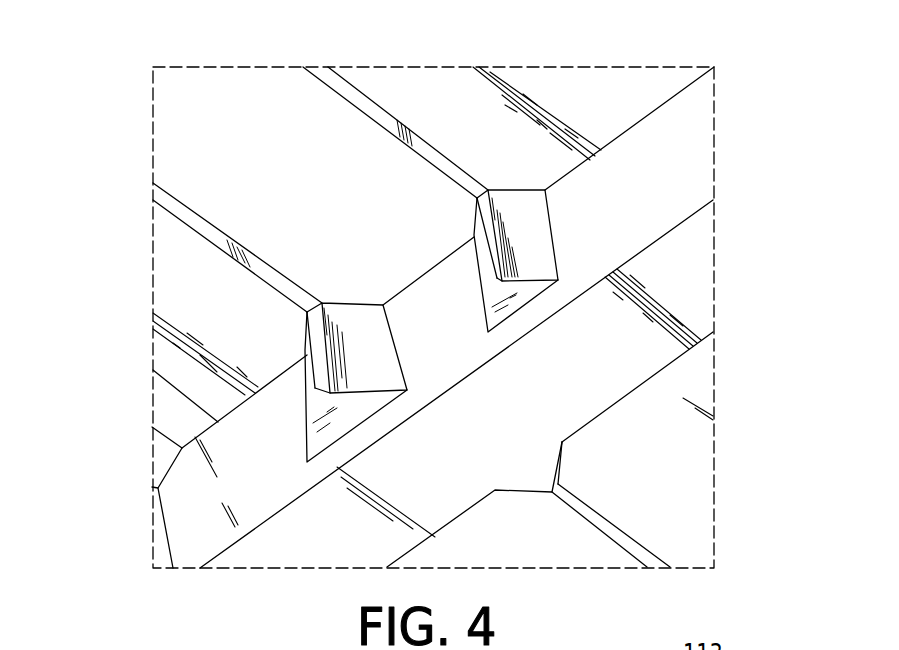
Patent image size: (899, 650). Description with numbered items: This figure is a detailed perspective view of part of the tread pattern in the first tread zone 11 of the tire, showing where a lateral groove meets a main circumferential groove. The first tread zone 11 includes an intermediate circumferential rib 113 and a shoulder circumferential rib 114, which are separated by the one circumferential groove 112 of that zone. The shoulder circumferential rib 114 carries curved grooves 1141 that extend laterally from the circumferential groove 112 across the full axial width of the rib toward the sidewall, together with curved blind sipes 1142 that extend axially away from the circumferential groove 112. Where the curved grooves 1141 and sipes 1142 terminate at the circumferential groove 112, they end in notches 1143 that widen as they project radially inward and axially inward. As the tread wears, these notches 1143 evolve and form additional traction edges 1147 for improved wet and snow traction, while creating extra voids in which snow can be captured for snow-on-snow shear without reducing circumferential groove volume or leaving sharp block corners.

The first tread zone 11 is at (118, 114).
The shoulder circumferential rib 114 is at (238, 107).
The curved grooves 1141 is at (212, 235).
The curved blind sipes 1142 is at (360, 105).
The traction edges 1147 is at (352, 312).
The circumferential groove 112 is at (688, 260).
The notches 1143 is at (394, 434).
The intermediate circumferential rib 113 is at (667, 518).